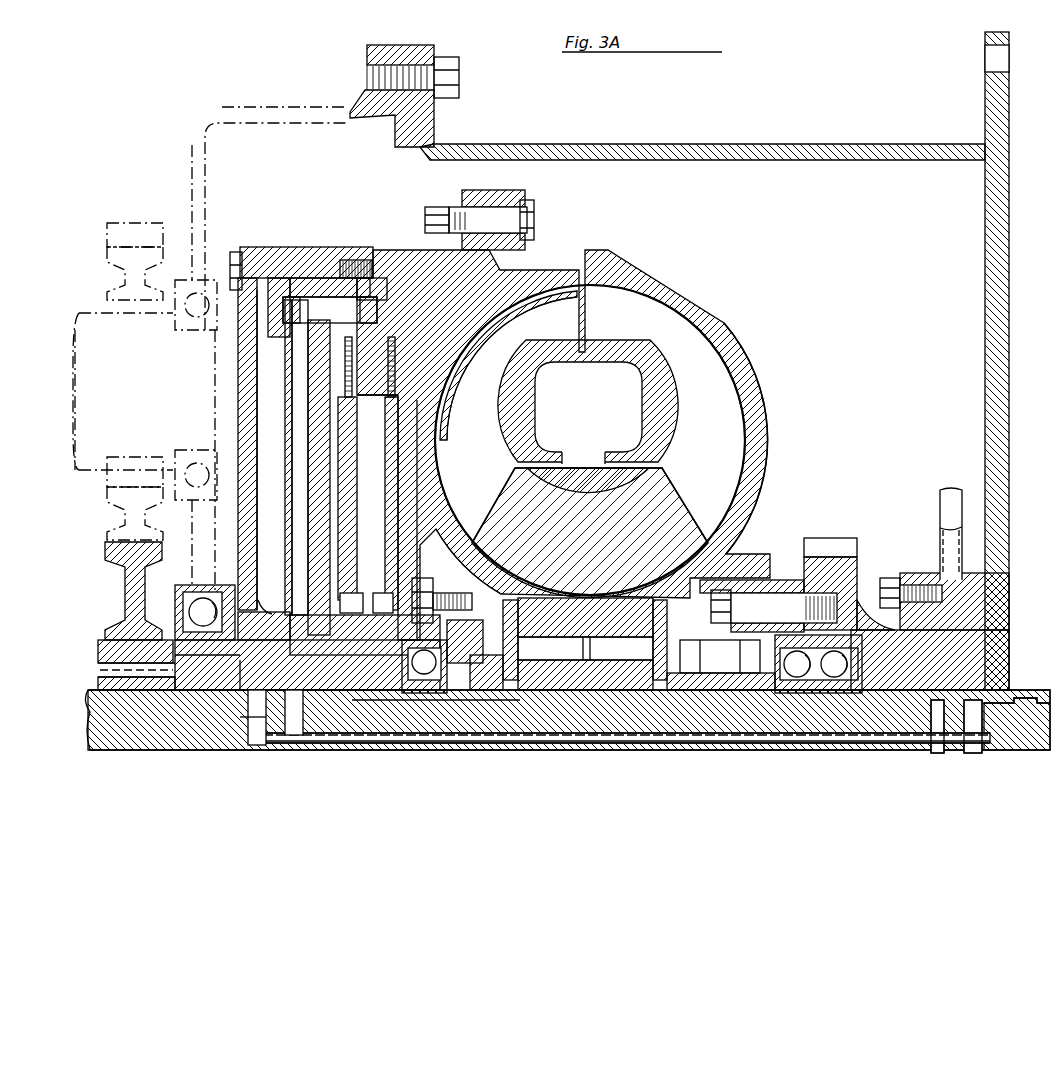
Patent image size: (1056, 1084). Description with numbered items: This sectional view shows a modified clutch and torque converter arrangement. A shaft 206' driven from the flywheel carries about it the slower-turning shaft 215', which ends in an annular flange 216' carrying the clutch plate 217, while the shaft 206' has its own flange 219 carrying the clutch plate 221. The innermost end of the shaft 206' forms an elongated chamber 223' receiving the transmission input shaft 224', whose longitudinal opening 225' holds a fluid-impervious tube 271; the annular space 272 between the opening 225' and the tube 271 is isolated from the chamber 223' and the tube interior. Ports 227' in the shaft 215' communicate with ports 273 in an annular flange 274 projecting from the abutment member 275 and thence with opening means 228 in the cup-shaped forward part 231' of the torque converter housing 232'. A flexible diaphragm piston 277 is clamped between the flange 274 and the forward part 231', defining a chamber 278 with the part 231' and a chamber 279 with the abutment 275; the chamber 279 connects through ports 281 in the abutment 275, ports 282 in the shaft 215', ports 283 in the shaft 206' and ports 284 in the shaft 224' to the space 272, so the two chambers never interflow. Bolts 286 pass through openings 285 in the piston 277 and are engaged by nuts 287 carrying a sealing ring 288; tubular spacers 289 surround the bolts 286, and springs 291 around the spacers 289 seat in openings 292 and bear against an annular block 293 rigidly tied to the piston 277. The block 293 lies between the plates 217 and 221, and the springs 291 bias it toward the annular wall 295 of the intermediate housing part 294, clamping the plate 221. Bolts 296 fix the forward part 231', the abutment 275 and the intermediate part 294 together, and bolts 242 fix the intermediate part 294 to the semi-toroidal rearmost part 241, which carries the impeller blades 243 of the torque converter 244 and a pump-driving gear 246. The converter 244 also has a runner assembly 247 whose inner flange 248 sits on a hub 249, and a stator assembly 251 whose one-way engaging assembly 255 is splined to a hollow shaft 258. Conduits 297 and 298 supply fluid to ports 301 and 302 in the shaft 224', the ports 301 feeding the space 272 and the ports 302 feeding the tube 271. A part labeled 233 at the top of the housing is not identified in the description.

The mounting bracket 233 is at (352, 101).
The bolts 242 is at (537, 220).
The torque converter housing 232' is at (563, 445).
The semi-toroidal part 241 is at (740, 355).
The intermediate part 294 is at (460, 292).
The annular wall 295 is at (455, 330).
The torque converter 244 is at (588, 416).
The impeller blades 243 is at (705, 426).
The vaned runner assembly 247 is at (478, 464).
The vaned stator assembly 251 is at (590, 532).
The inner flange 248 is at (472, 550).
The bolts 296 is at (240, 262).
The nuts 287 is at (272, 285).
The sealing ring 288 is at (298, 290).
The tubular spacer member 289 is at (350, 262).
The spring 291 is at (349, 300).
The bolts 286 is at (393, 300).
The opening 292 is at (372, 278).
The circular openings 285 is at (300, 318).
The abutment member 275 is at (260, 419).
The forward part 231' is at (217, 450).
The annular chamber 278 is at (288, 350).
The diaphragm piston 277 is at (300, 364).
The annular chamber 279 is at (318, 401).
The clutch plate 217 is at (352, 470).
The flange 219 is at (392, 600).
The clutch plate 221 is at (398, 433).
The annular block 293 is at (378, 372).
The opening means 228 is at (270, 600).
The ports 281 is at (318, 612).
The ports 273 is at (205, 645).
The annular flange 274 is at (140, 655).
The shaft 206' is at (561, 733).
The transmission input shaft 224' is at (1017, 739).
The ports 301 is at (937, 738).
The ports 302 is at (974, 740).
The tube 271 is at (490, 744).
The annular space 272 is at (560, 730).
The longitudinally extending opening 225' is at (823, 735).
The shaft 215' is at (205, 716).
The ports 227' is at (203, 722).
The ports 283 is at (262, 745).
The elongated chamber 223' is at (255, 761).
The ports 284 is at (297, 730).
The ports 282 is at (370, 722).
The annular flange 216' is at (436, 735).
The annular hub 249 is at (497, 600).
The one-way engaging assembly 255 is at (592, 622).
The gear 246 is at (826, 545).
The hollow shaft 258 is at (815, 720).
The conduit means 298 is at (940, 538).
The conduit means 297 is at (942, 492).